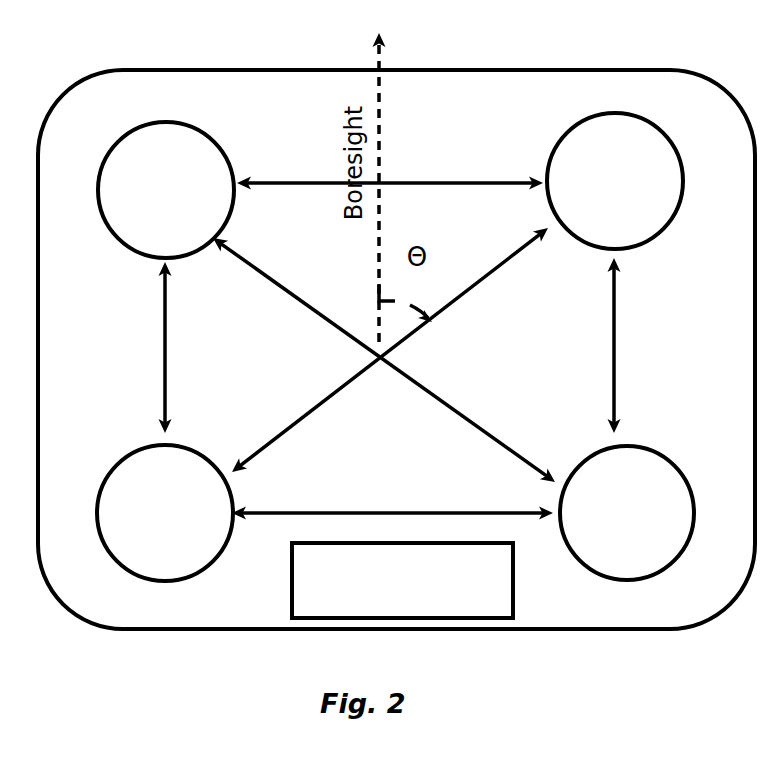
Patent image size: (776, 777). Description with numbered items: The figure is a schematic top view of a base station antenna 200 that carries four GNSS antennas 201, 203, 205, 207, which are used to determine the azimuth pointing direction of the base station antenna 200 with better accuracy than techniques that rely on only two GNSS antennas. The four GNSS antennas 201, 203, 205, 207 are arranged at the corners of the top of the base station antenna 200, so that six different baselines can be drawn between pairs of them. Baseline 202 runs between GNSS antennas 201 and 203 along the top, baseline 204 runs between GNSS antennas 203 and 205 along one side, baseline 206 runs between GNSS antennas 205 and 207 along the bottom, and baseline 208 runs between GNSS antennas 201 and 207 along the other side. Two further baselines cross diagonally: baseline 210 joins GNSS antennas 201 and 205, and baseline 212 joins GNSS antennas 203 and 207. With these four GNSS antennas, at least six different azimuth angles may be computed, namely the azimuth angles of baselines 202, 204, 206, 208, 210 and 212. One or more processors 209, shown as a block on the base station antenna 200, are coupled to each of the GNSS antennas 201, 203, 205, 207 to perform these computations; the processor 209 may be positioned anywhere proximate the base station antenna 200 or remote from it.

The base station antenna 200 is at (135, 68).
The GNSS antenna 201 is at (593, 195).
The baseline 202 is at (390, 173).
The GNSS antenna 203 is at (144, 204).
The baseline 204 is at (138, 347).
The GNSS antenna 205 is at (143, 527).
The baseline 206 is at (392, 502).
The GNSS antenna 207 is at (605, 527).
The baseline 208 is at (638, 345).
The processor 209 is at (381, 594).
The baseline 210 is at (390, 350).
The baseline 212 is at (384, 360).